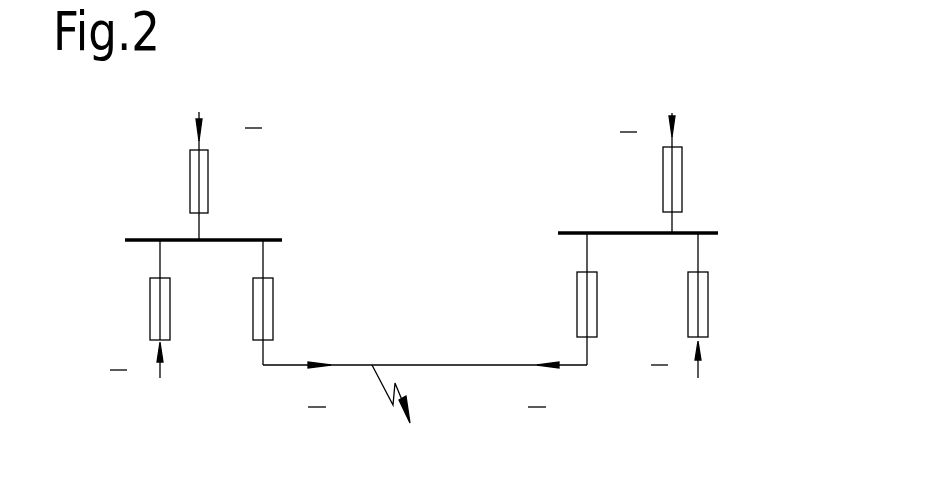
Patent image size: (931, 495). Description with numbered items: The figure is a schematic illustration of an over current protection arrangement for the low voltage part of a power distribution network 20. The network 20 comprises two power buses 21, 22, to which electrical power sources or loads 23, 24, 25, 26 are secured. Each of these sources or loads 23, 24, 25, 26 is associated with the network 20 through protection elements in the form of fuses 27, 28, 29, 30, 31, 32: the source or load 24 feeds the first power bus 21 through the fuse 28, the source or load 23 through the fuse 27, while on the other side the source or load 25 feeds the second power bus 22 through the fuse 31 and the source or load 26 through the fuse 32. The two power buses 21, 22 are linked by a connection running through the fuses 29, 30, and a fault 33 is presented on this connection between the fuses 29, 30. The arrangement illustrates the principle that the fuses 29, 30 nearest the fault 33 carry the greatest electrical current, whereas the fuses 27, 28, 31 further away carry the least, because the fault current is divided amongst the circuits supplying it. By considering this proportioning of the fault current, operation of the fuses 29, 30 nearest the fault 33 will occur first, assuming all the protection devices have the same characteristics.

The power distribution network 20 is at (724, 128).
The power bus 21 is at (250, 240).
The power bus 22 is at (628, 233).
The electrical power source or load 23 is at (160, 378).
The electrical power source or load 24 is at (199, 112).
The electrical power source or load 25 is at (673, 111).
The electrical power source or load 26 is at (697, 376).
The fuse 27 is at (150, 318).
The fuse 28 is at (190, 175).
The fuse 29 is at (273, 310).
The fuse 30 is at (577, 310).
The fuse 31 is at (682, 190).
The fuse 32 is at (708, 305).
The fault 33 is at (390, 403).